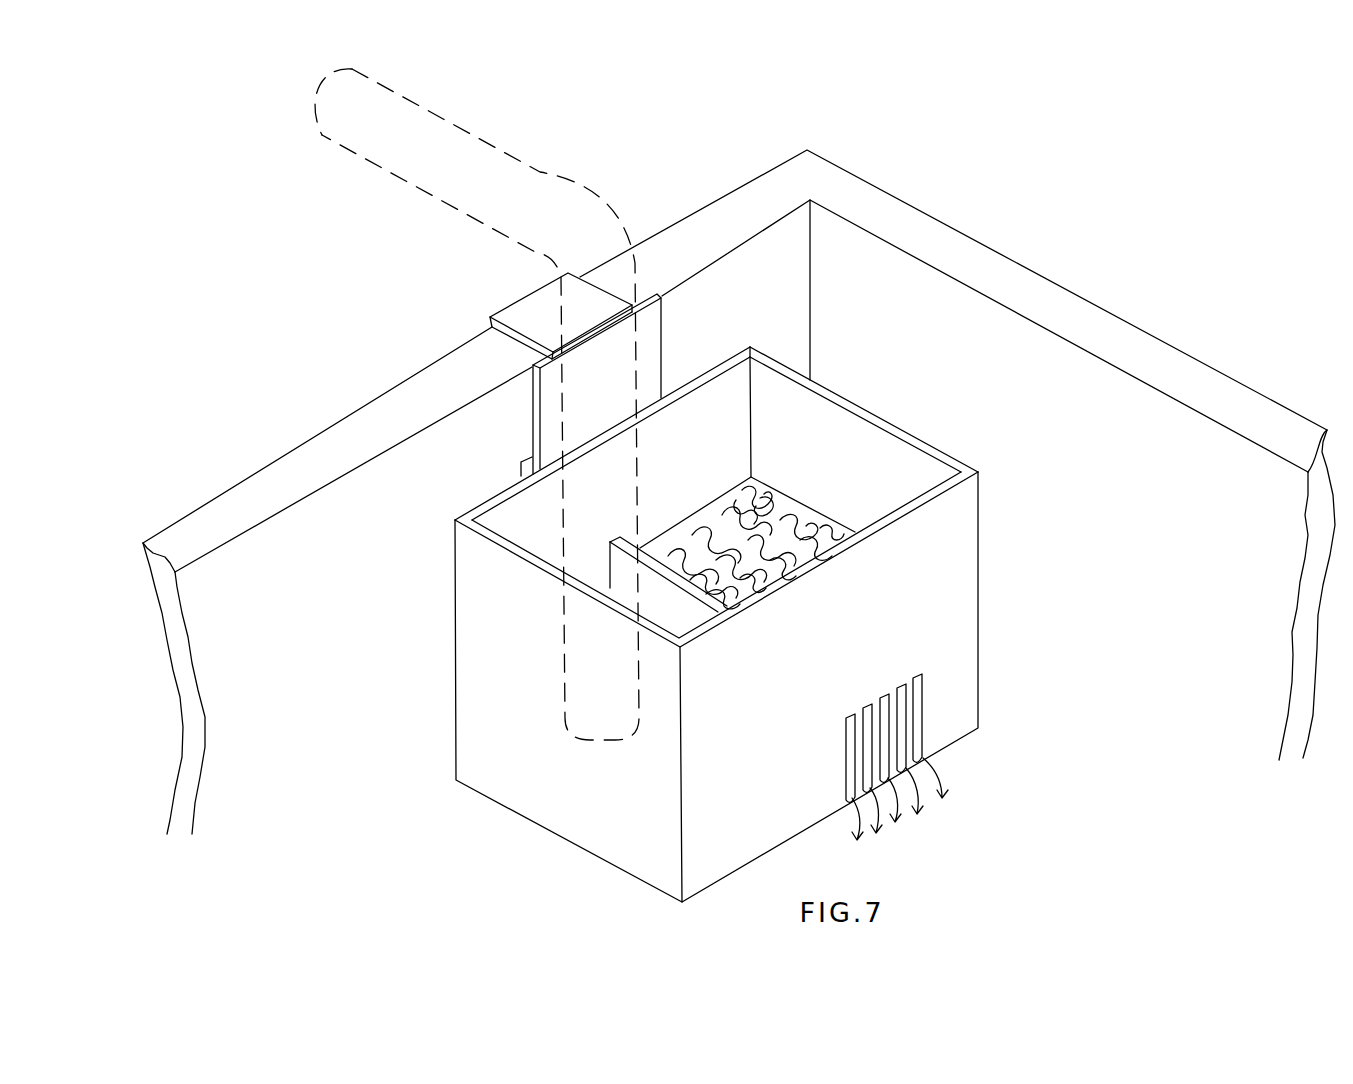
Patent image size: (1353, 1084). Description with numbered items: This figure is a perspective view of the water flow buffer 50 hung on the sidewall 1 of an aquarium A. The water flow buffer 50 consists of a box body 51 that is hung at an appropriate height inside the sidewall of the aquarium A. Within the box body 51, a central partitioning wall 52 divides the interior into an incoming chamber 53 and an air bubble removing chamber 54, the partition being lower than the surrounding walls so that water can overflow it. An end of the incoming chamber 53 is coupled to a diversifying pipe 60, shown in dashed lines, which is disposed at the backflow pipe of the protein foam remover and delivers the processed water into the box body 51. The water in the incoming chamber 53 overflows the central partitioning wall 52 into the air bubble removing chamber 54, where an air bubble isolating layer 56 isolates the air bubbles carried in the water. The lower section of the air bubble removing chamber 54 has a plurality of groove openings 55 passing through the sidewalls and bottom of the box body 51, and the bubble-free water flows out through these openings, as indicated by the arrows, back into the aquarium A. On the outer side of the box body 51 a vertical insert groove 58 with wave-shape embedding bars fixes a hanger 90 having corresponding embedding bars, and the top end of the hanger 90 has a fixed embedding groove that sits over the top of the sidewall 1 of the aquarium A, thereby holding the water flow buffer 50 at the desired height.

The sidewall 1 is at (1040, 282).
The aquarium A is at (739, 483).
The water flow buffer 50 is at (691, 492).
The box body 51 is at (845, 397).
The central partitioning wall 52 is at (655, 555).
The incoming chamber 53 is at (542, 548).
The air bubble removing chamber 54 is at (873, 505).
The groove openings 55 is at (921, 733).
The air bubble isolating layer 56 is at (797, 502).
The vertical insert groove 58 is at (523, 463).
The diversifying pipe 60 is at (534, 190).
The hanger 90 is at (532, 397).